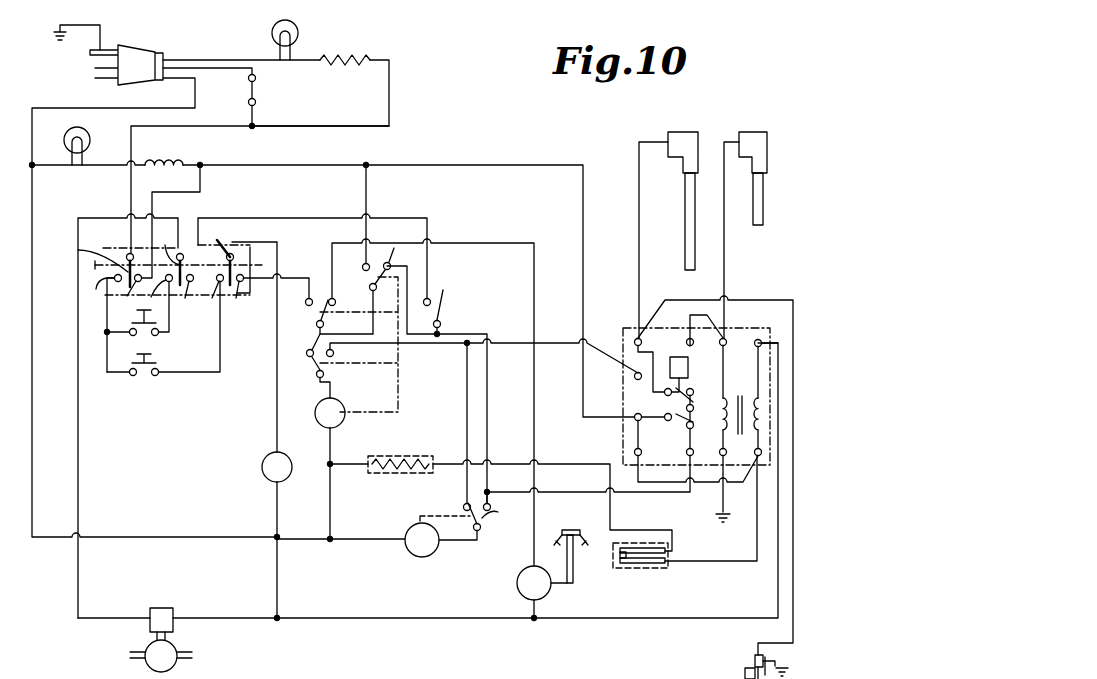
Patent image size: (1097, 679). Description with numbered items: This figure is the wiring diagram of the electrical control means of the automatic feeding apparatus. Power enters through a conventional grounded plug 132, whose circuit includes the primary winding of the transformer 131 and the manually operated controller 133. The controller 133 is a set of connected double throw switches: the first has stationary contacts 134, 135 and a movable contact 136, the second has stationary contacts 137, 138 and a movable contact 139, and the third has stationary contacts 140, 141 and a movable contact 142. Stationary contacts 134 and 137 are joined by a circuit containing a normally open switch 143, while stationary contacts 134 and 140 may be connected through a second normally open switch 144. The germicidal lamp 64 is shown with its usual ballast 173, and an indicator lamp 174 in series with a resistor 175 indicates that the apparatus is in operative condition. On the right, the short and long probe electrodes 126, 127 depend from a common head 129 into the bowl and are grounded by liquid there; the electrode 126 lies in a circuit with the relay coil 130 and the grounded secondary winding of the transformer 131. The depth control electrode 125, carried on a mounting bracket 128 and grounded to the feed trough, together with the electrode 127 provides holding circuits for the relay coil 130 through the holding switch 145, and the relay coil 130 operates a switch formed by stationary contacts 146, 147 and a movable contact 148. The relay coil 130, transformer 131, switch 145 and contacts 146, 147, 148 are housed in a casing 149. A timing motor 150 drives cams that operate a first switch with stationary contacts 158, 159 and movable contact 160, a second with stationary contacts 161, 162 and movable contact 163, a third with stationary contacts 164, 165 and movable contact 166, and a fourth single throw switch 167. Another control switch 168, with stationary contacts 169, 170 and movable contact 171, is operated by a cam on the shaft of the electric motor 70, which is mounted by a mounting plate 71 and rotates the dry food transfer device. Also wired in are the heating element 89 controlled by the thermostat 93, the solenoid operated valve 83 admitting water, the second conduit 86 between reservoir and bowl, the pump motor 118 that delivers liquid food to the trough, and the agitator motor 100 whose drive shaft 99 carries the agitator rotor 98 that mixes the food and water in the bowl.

The grounded plug 132 is at (143, 53).
The indicator lamp 174 is at (298, 29).
The resistor 175 is at (347, 58).
The germicidal lamp 64 is at (91, 137).
The ballast 173 is at (183, 161).
The manually operated controller 133 is at (121, 247).
The movable contact 136 is at (78, 268).
The movable contact 139 is at (169, 256).
The movable contact 142 is at (219, 255).
The stationary contact 134 is at (102, 324).
The stationary contact 135 is at (126, 296).
The stationary contact 137 is at (162, 304).
The stationary contact 138 is at (191, 298).
The stationary contact 140 is at (191, 324).
The stationary contact 141 is at (246, 301).
The normally open switch 143 is at (150, 336).
The second normally open switch 144 is at (147, 378).
The stationary contact 161 is at (305, 302).
The stationary contact 162 is at (336, 302).
The movable contact 163 is at (315, 323).
The stationary contact 164 is at (362, 267).
The stationary contact 165 is at (394, 248).
The movable contact 166 is at (370, 281).
The single throw switch 167 is at (443, 300).
The stationary contact 159 is at (334, 353).
The stationary contact 158 is at (309, 364).
The movable contact 160 is at (304, 388).
The timing motor 150 is at (343, 418).
The electrical heating element 89 is at (410, 455).
The pump motor 118 is at (262, 470).
The stationary contact 169 is at (464, 505).
The stationary contact 170 is at (491, 507).
The movable contact 171 is at (504, 524).
The control switch 168 is at (488, 536).
The electric motor 70 is at (409, 553).
The agitator motor 100 is at (517, 591).
The solenoid operated valve 83 is at (180, 643).
The second conduit 86 is at (405, 678).
The mounting plate 71 is at (541, 670).
The agitator rotor 98 is at (562, 532).
The drive shaft 99 is at (574, 565).
The thermostat 93 is at (643, 564).
The common head 129 is at (744, 140).
The long electrode 127 is at (685, 227).
The short electrode 126 is at (764, 206).
The casing 149 is at (622, 330).
The relay coil 130 is at (673, 357).
The transformer 131 is at (741, 386).
The holding switch 145 is at (660, 392).
The stationary contact 146 is at (706, 420).
The stationary contact 147 is at (724, 448).
The movable contact 148 is at (684, 424).
The mounting bracket 128 is at (752, 661).
The depth control electrode 125 is at (745, 676).